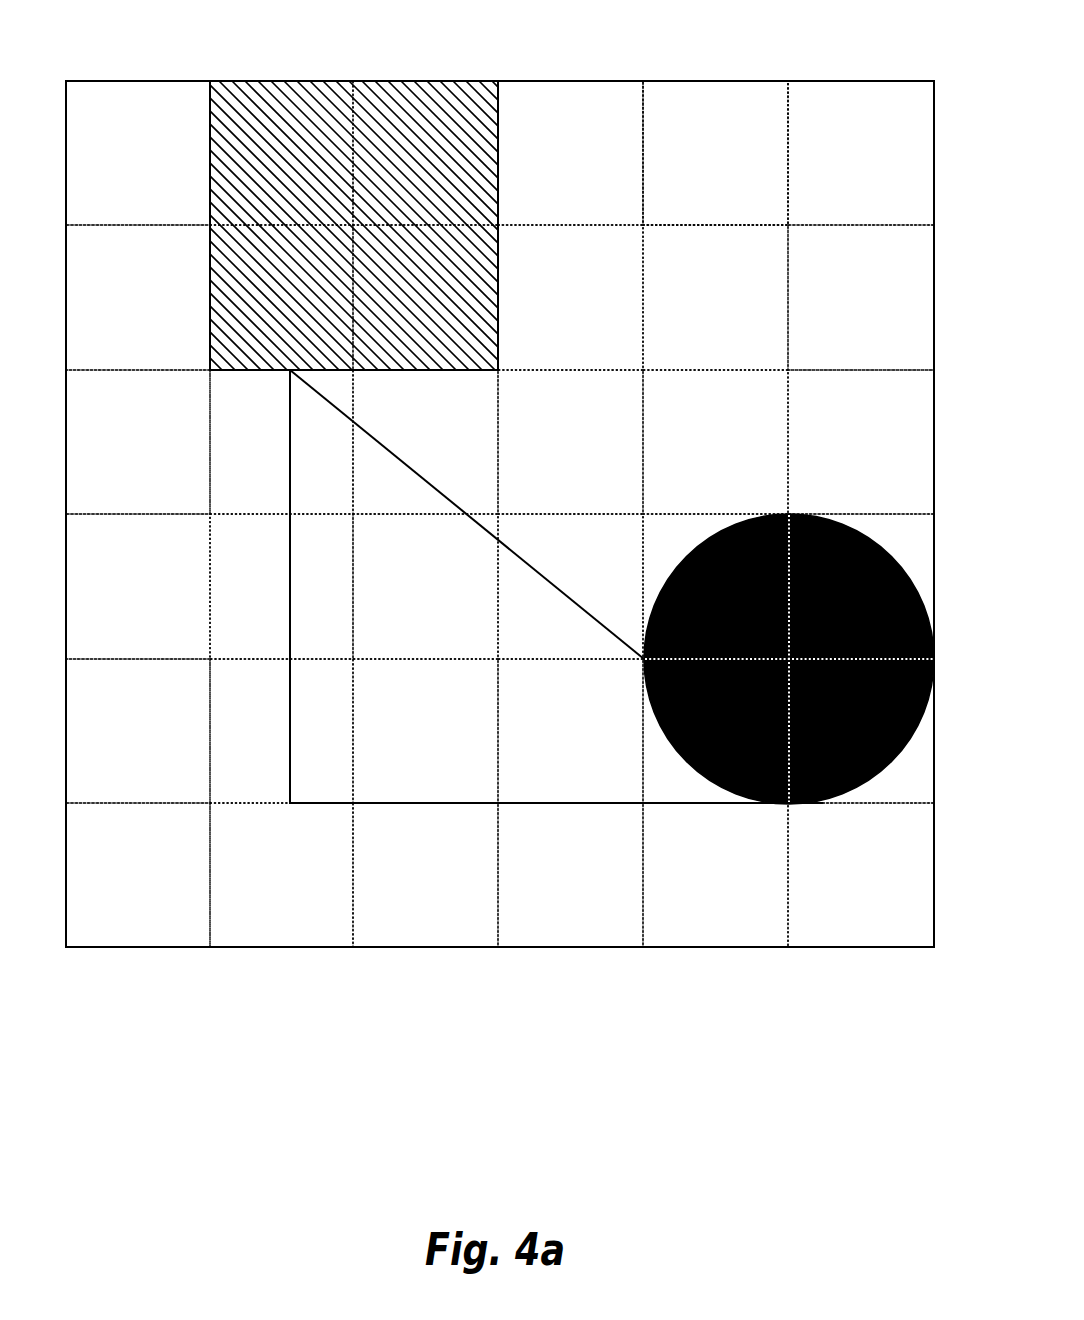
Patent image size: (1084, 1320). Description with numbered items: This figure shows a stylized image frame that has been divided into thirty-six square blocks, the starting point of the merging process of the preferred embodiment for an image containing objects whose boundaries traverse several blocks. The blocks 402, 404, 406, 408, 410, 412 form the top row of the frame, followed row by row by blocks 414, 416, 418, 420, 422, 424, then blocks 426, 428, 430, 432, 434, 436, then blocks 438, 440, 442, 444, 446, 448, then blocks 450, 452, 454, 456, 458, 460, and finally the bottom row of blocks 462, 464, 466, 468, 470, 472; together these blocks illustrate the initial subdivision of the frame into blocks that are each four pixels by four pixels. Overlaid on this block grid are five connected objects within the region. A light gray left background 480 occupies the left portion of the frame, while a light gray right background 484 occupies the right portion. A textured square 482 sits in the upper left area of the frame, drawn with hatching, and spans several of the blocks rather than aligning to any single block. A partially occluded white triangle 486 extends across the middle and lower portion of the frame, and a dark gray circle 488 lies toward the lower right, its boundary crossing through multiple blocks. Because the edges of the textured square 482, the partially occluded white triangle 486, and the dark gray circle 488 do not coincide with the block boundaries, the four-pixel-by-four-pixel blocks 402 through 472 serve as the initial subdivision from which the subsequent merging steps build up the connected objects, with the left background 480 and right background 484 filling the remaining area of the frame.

The block 402 is at (138, 153).
The block 404 is at (281, 153).
The block 406 is at (425, 153).
The block 408 is at (570, 153).
The block 410 is at (715, 153).
The block 412 is at (861, 153).
The block 414 is at (138, 297).
The block 416 is at (281, 297).
The block 418 is at (425, 297).
The block 420 is at (570, 297).
The block 422 is at (715, 297).
The block 424 is at (861, 297).
The block 426 is at (138, 442).
The block 428 is at (281, 442).
The block 430 is at (425, 442).
The block 432 is at (570, 442).
The block 434 is at (715, 442).
The block 436 is at (861, 442).
The block 438 is at (138, 586).
The block 440 is at (281, 586).
The block 442 is at (425, 586).
The block 444 is at (570, 586).
The block 446 is at (715, 586).
The block 448 is at (861, 586).
The block 450 is at (138, 731).
The block 452 is at (281, 731).
The block 454 is at (425, 731).
The block 456 is at (570, 731).
The block 458 is at (715, 731).
The block 460 is at (861, 731).
The block 462 is at (138, 875).
The block 464 is at (281, 875).
The block 466 is at (425, 875).
The block 468 is at (570, 875).
The block 470 is at (715, 875).
The block 472 is at (861, 875).
The light gray left background 480 is at (102, 113).
The textured square 482 is at (280, 130).
The light gray right background 484 is at (708, 123).
The partially occluded white triangle 486 is at (423, 745).
The dark gray circle 488 is at (848, 748).